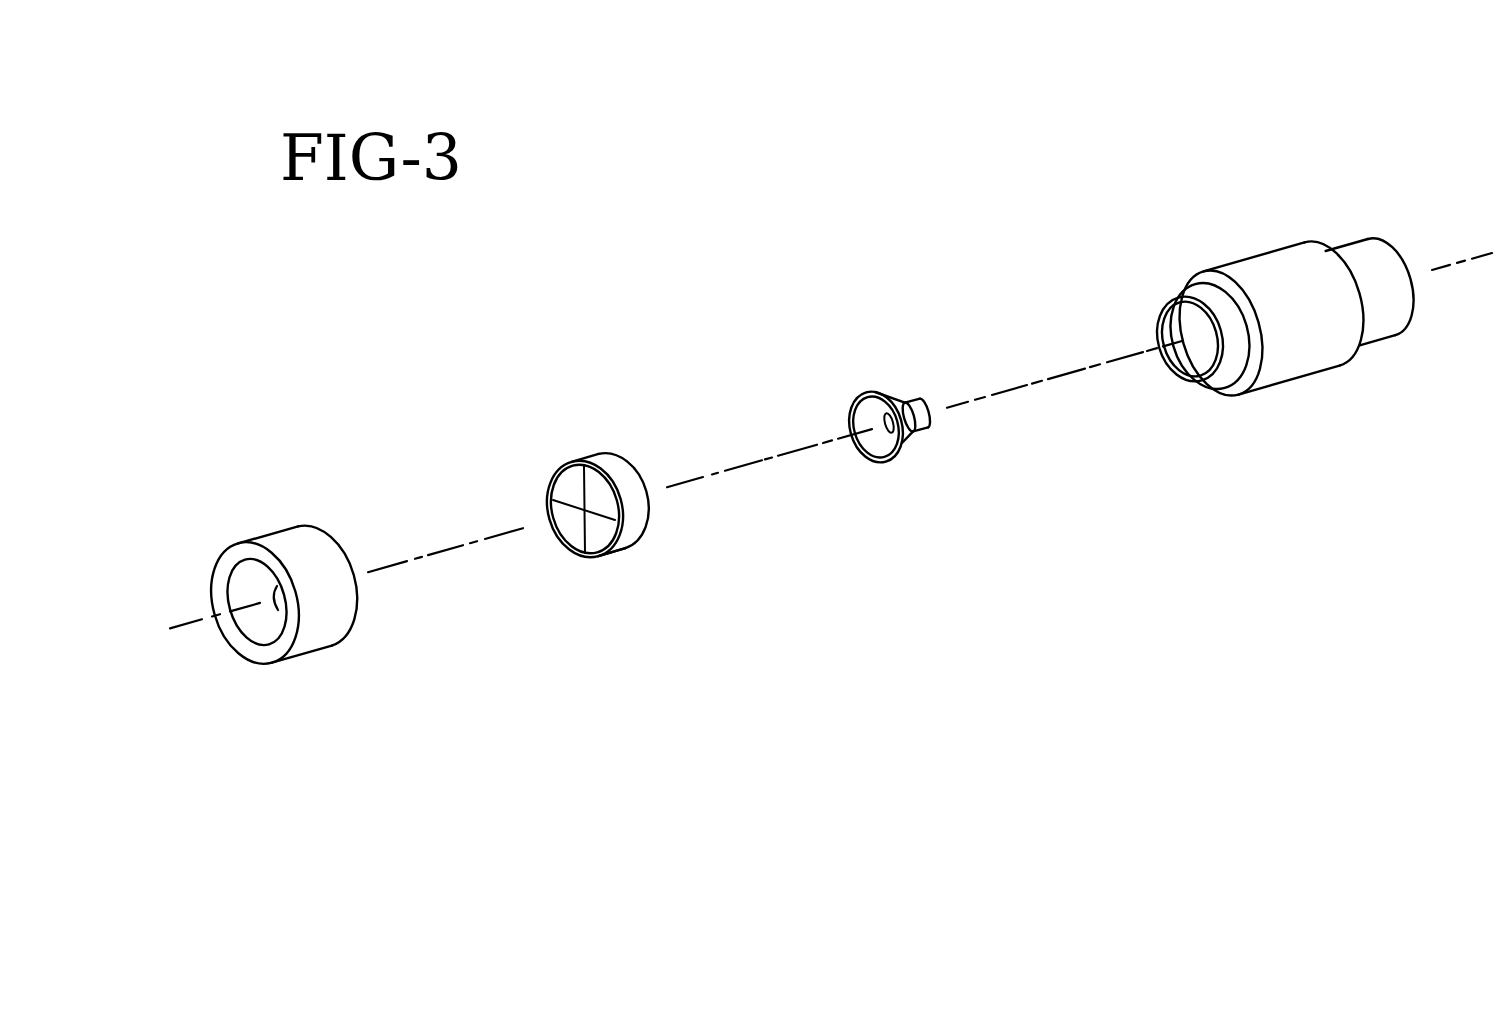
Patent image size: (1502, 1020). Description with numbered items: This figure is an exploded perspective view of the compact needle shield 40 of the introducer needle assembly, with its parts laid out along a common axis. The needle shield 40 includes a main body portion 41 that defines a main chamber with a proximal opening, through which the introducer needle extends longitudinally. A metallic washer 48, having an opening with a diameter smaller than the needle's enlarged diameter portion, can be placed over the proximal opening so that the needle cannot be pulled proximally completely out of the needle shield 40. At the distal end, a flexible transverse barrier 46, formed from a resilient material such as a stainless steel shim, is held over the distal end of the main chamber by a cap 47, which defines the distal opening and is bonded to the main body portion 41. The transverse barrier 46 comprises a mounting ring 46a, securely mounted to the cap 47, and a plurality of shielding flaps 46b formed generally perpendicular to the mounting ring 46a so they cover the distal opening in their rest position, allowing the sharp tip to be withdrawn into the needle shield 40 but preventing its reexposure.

The needle shield 40 is at (902, 291).
The main body portion 41 is at (1268, 262).
The transverse barrier 46 is at (557, 508).
The mounting ring 46a is at (625, 543).
The shielding flaps 46b is at (572, 525).
The cap 47 is at (297, 542).
The metallic washer 48 is at (905, 441).